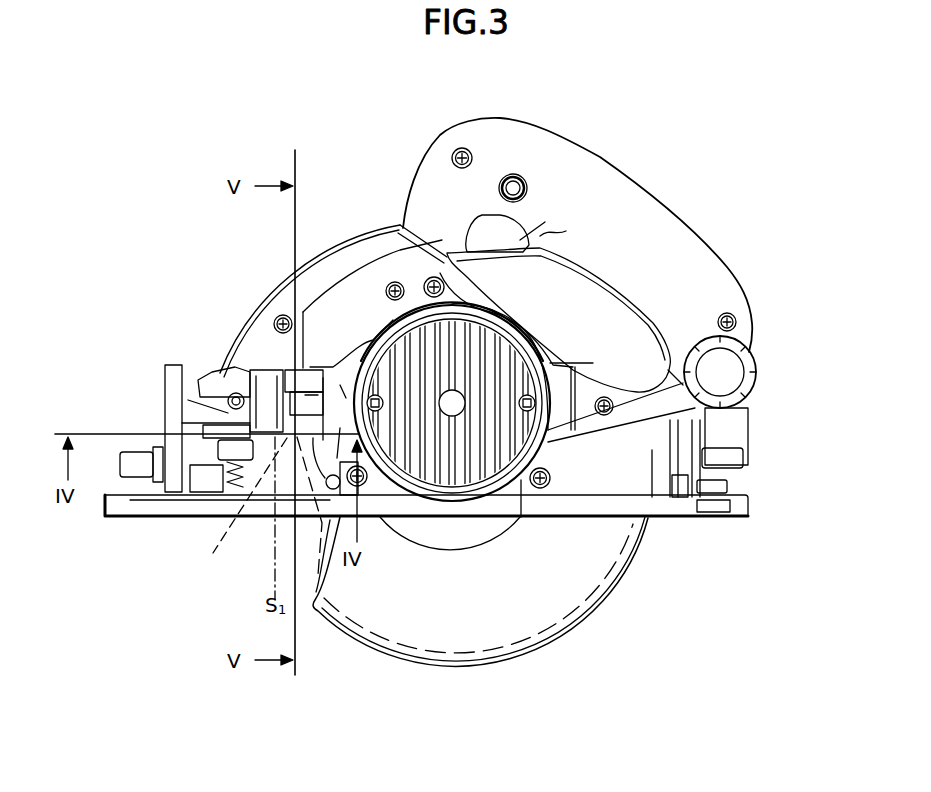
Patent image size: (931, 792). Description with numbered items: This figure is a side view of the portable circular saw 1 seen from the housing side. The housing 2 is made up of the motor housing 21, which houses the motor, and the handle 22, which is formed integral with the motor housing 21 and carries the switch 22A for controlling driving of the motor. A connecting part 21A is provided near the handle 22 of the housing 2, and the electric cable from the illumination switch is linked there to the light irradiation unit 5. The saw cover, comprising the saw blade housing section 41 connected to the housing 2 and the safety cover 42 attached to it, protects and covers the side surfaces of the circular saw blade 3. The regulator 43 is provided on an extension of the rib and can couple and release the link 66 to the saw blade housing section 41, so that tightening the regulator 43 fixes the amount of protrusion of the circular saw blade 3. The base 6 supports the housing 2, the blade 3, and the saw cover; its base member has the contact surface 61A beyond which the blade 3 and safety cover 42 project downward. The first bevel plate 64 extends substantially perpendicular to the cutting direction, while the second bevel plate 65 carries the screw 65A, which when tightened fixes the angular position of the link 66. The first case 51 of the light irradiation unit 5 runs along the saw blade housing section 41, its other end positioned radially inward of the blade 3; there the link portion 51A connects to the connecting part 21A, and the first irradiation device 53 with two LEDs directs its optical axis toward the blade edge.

The circular saw 1 is at (745, 239).
The housing 2 is at (608, 500).
The circular saw blade 3 is at (318, 614).
The light irradiation unit 5 is at (200, 377).
The base 6 is at (167, 510).
The motor housing 21 is at (521, 520).
The connecting part 21A is at (343, 393).
The handle 22 is at (627, 193).
The switch 22A is at (537, 195).
The saw blade housing section 41 is at (272, 287).
The safety cover 42 is at (450, 663).
The regulator 43 is at (732, 422).
The first case 51 is at (237, 380).
The link portion 51A is at (312, 393).
The first irradiation device 53 is at (265, 452).
The contact surface 61A is at (194, 520).
The first bevel plate 64 is at (172, 400).
The second bevel plate 65 is at (678, 495).
The screw 65A is at (733, 460).
The link 66 is at (730, 477).